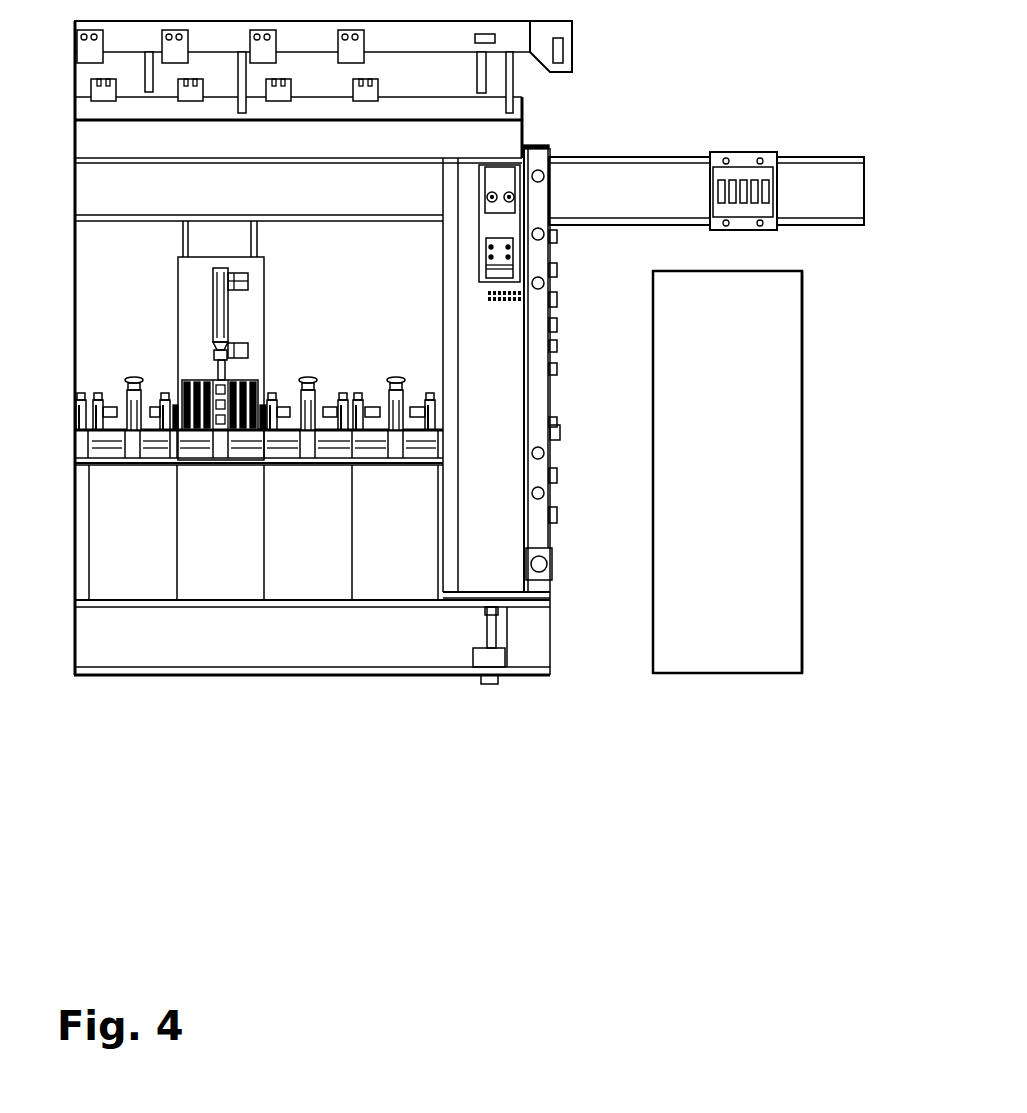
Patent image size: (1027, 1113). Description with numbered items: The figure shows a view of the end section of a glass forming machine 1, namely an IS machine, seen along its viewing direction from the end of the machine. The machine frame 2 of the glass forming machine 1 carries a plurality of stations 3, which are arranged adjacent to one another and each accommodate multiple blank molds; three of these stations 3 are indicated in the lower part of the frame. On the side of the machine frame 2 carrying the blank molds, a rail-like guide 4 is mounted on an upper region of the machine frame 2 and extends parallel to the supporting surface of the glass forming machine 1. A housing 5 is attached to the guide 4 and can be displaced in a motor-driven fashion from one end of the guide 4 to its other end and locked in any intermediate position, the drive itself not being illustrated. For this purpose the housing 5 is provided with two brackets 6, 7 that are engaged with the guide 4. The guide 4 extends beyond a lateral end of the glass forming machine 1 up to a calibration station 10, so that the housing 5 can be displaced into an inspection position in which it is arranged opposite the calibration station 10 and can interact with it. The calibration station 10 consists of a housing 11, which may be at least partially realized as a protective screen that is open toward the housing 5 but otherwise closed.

The glass forming machine 1 is at (62, 363).
The machine frame 2 is at (535, 142).
The stations 3 is at (132, 557).
The guide 4 is at (845, 157).
The housing 5 is at (177, 314).
The bracket 6 is at (183, 248).
The bracket 7 is at (258, 244).
The calibration station 10 is at (802, 513).
The housing 11 is at (773, 475).